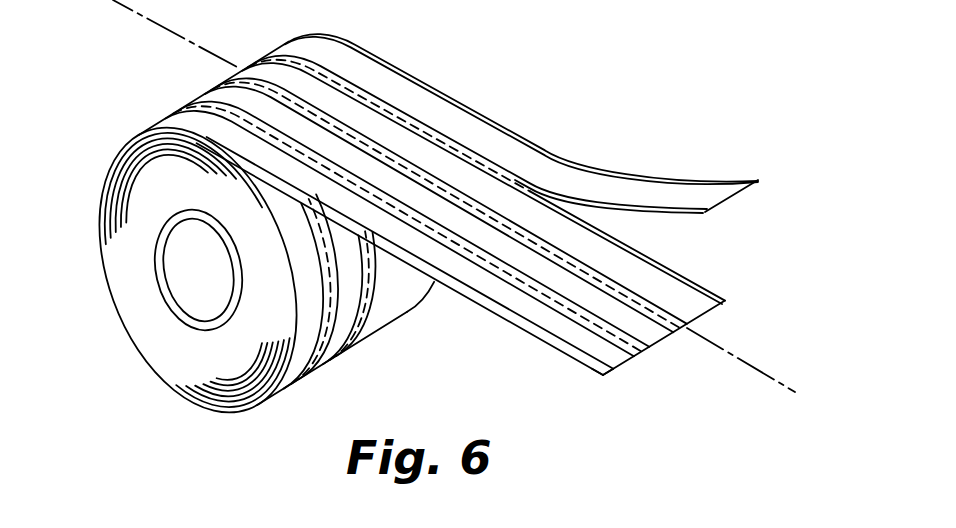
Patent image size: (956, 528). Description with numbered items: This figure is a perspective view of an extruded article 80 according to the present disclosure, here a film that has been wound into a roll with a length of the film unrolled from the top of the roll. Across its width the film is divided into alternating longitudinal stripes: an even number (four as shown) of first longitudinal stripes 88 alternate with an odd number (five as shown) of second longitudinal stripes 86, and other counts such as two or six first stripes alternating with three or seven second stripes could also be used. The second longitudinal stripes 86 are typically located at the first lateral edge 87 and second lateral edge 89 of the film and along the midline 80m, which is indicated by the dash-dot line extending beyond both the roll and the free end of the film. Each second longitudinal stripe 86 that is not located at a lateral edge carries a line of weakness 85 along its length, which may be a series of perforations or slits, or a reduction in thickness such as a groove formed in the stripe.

The extruded article 80 is at (410, 237).
The midline 80m is at (760, 370).
The line of weakness 85 is at (665, 313).
The second longitudinal stripes 86 is at (643, 348).
The first lateral edge 87 is at (513, 327).
The first longitudinal stripes 88 is at (615, 357).
The second lateral edge 89 is at (665, 182).